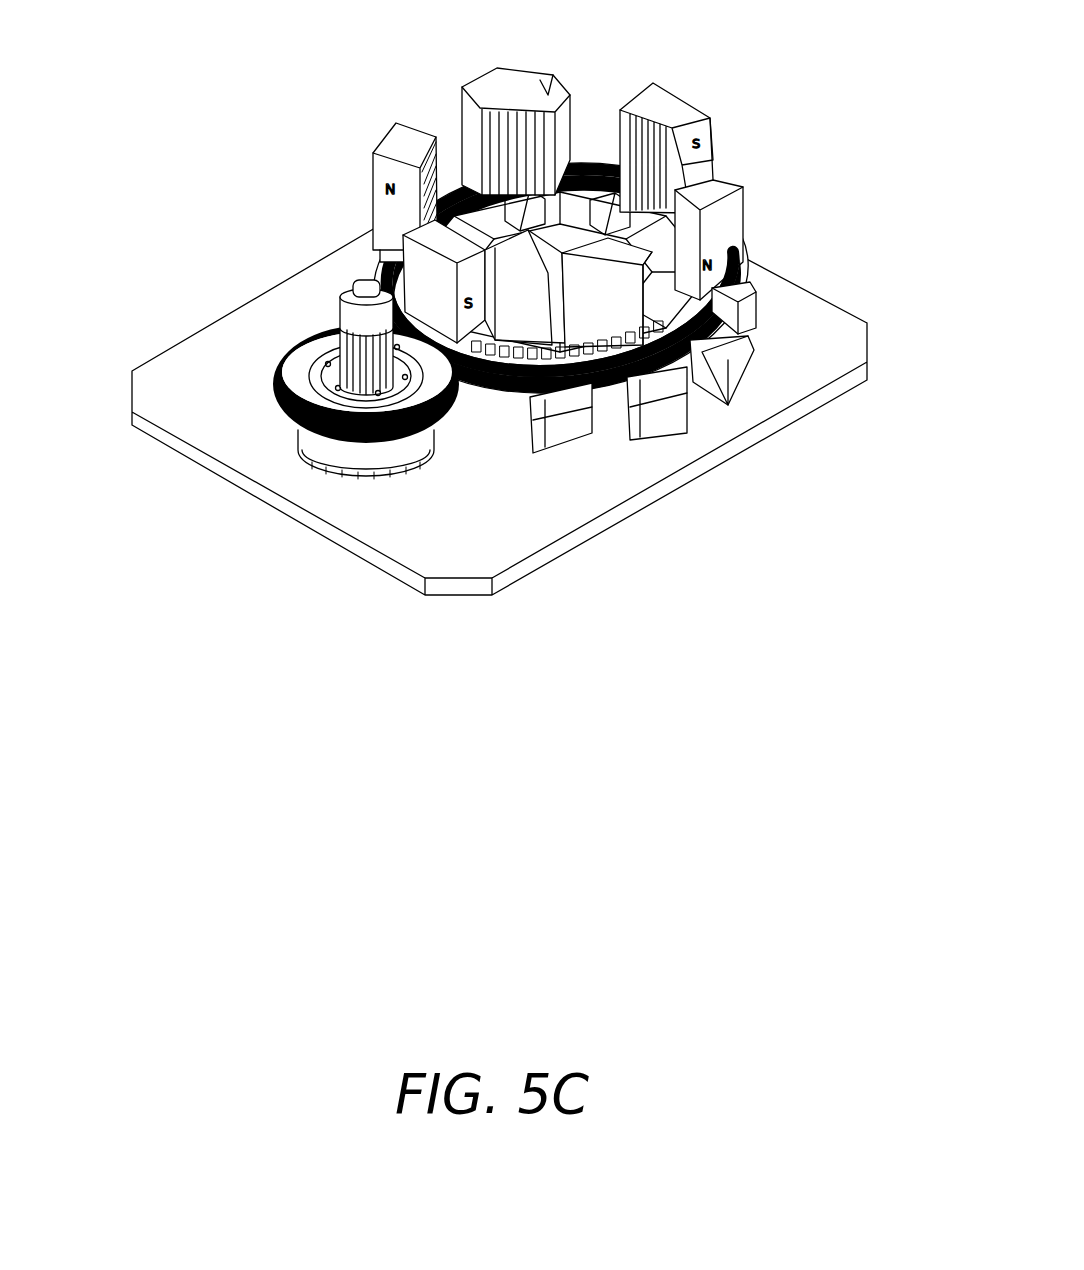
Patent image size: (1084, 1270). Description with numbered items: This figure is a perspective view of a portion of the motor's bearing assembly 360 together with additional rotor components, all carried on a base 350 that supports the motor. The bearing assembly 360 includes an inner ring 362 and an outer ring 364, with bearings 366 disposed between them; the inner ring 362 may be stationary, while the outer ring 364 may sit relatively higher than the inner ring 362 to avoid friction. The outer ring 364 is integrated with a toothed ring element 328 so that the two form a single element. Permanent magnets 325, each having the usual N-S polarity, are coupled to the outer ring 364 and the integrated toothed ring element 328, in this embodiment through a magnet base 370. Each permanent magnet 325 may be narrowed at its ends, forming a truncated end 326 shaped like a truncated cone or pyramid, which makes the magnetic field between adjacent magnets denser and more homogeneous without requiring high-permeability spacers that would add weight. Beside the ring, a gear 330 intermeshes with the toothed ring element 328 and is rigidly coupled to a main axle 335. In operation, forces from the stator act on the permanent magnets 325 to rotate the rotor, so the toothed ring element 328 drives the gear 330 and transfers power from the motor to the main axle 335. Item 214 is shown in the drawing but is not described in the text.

The wedge support 214 is at (753, 370).
The permanent magnet 325 is at (583, 318).
The truncated end 326 is at (460, 137).
The toothed ring element 328 is at (496, 392).
The gear 330 is at (279, 353).
The main axle 335 is at (352, 310).
The base 350 is at (162, 400).
The bearing assembly 360 is at (712, 312).
The inner ring 362 is at (525, 287).
The outer ring 364 is at (516, 375).
The bearings 366 is at (680, 353).
The magnet base 370 is at (595, 320).